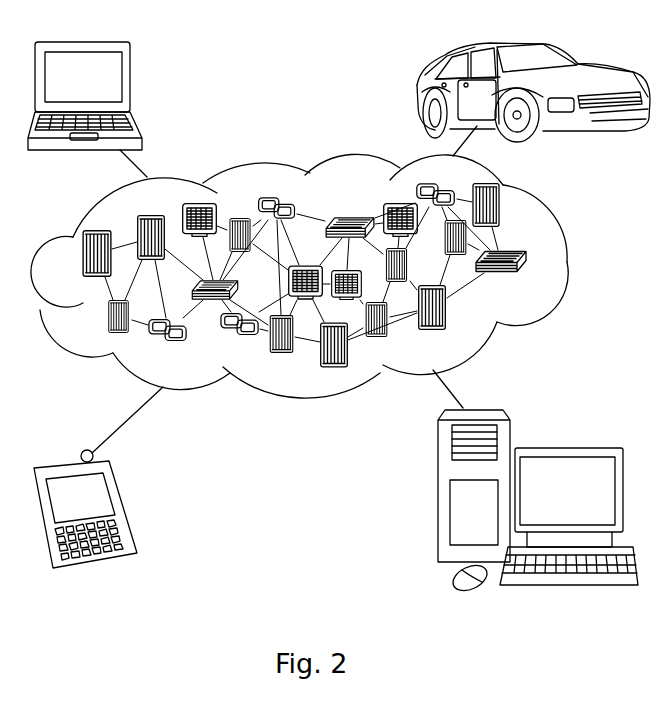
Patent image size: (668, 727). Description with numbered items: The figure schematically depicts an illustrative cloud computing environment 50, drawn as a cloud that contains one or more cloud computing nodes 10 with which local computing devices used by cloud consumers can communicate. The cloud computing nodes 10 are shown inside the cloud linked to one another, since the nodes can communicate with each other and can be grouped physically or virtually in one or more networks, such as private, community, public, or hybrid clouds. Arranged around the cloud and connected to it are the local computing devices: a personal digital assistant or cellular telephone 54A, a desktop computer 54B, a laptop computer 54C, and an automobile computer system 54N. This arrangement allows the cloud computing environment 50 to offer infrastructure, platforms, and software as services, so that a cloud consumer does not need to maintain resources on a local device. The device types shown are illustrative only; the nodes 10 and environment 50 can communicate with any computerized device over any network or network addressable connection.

The cloud computing node 10 is at (532, 283).
The cloud computing environment 50 is at (318, 276).
The personal digital assistant or cellular telephone 54A is at (125, 508).
The desktop computer 54B is at (573, 438).
The laptop computer 54C is at (128, 88).
The automobile computer system 54N is at (420, 94).